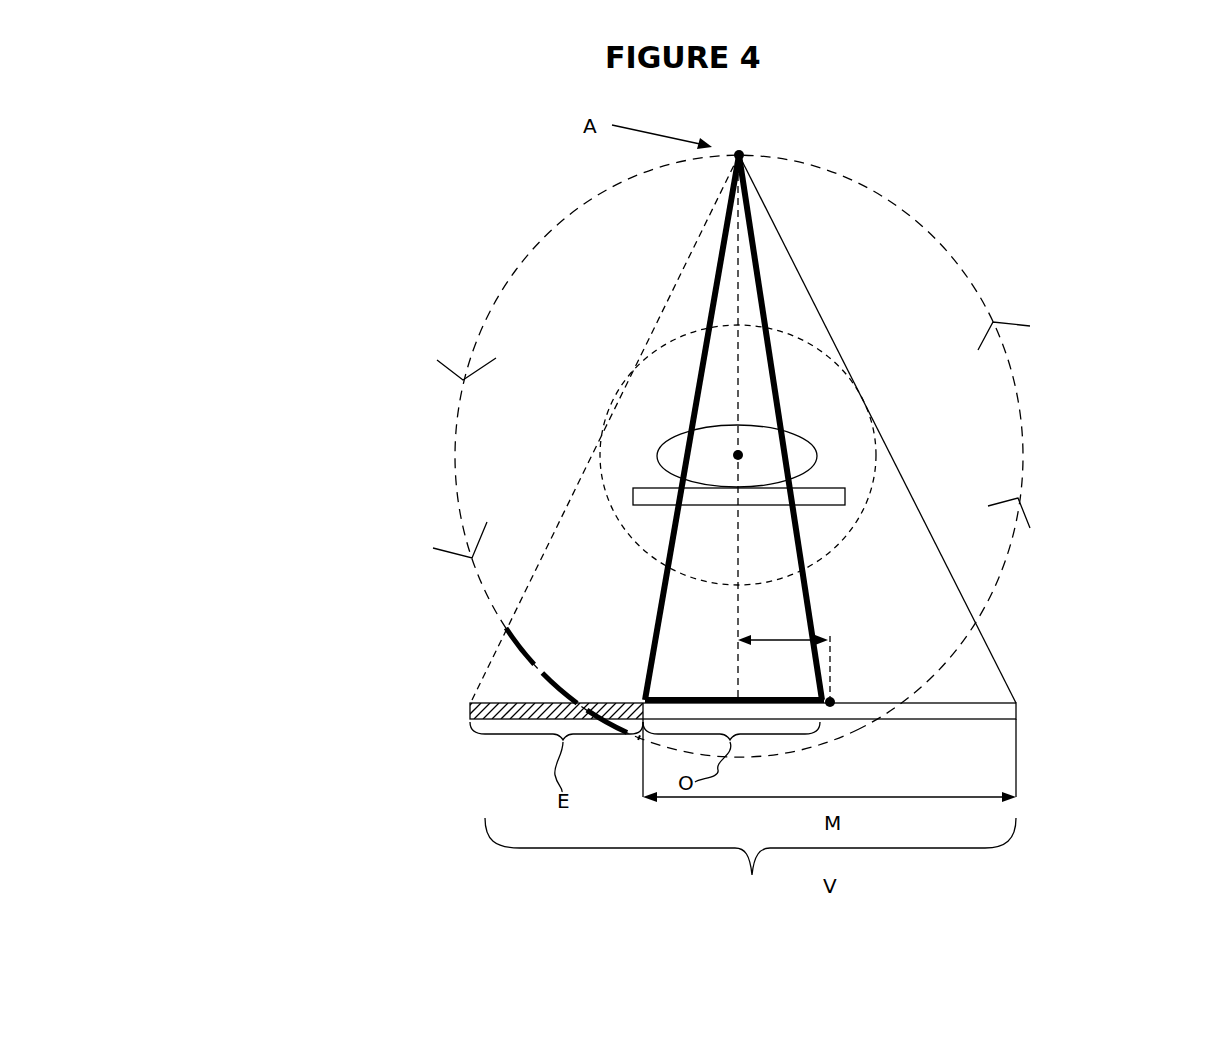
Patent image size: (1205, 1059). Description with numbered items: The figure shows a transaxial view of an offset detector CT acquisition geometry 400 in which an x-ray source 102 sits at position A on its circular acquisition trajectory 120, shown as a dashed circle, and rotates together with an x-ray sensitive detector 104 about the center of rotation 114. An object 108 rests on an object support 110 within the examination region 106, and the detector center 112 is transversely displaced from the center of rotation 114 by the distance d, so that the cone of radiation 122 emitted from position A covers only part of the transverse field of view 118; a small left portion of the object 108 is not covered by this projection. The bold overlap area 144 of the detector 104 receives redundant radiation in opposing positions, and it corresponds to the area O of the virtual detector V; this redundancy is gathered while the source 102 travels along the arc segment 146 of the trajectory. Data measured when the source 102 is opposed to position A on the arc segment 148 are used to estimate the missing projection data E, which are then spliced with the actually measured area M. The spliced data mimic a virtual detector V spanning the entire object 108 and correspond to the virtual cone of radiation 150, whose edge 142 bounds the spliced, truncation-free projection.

The offset detector CT acquisition geometry 400 is at (278, 232).
The x-ray source 102 is at (743, 152).
The x-ray sensitive detector 104 is at (997, 713).
The examination region 106 is at (666, 402).
The object 108 is at (658, 455).
The object support 110 is at (645, 493).
The detector center 112 is at (833, 700).
The center of rotation 114 is at (741, 453).
The transverse field of view 118 is at (835, 548).
The acquisition trajectory 120 is at (455, 420).
The cone of radiation 122 is at (833, 340).
The beam edge 142 is at (690, 378).
The overlap area 144 is at (718, 698).
The arc segment 146 is at (805, 752).
The arc segment 148 is at (468, 706).
The virtual cone of radiation 150 is at (475, 683).